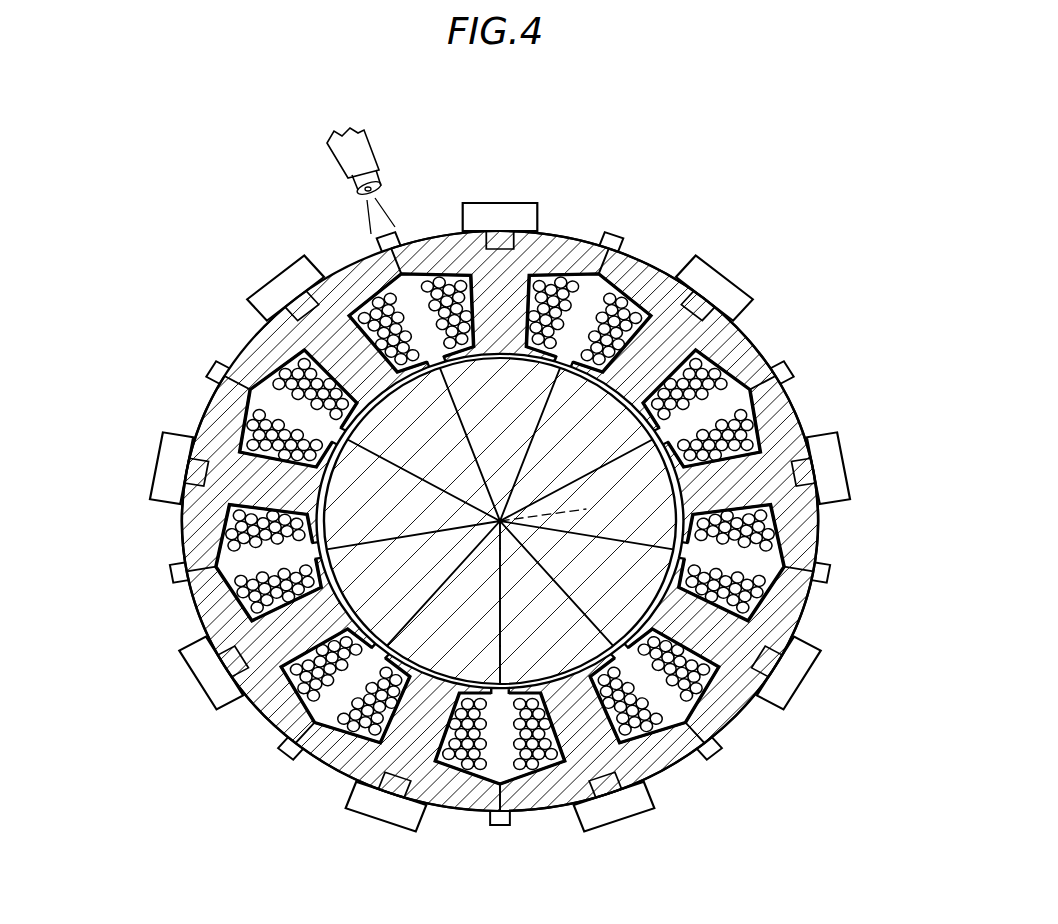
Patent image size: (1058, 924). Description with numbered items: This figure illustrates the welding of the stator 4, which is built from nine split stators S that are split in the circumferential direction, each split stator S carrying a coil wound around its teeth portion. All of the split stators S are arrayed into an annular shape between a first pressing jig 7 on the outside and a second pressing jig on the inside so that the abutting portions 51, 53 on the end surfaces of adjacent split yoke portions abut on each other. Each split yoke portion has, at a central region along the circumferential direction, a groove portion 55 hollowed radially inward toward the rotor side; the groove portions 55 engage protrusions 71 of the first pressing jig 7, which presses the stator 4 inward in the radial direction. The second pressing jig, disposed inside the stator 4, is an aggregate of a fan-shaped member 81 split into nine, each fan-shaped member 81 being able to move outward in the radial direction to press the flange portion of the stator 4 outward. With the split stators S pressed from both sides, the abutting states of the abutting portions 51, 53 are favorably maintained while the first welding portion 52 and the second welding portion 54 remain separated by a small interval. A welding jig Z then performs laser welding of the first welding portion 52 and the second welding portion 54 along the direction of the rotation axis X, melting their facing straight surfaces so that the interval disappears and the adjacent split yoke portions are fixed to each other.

The stator 4 is at (146, 139).
The split stator S is at (333, 251).
The welding jig Z is at (366, 146).
The rotation axis X is at (500, 521).
The first pressing jig 7 is at (280, 257).
The protrusion 71 is at (284, 311).
The groove portion 55 is at (504, 241).
The abutting portion 51 is at (566, 233).
The first welding portion 52 is at (791, 367).
The abutting portion 53 is at (614, 258).
The second welding portion 54 is at (789, 381).
The fan-shaped member 81 is at (768, 471).